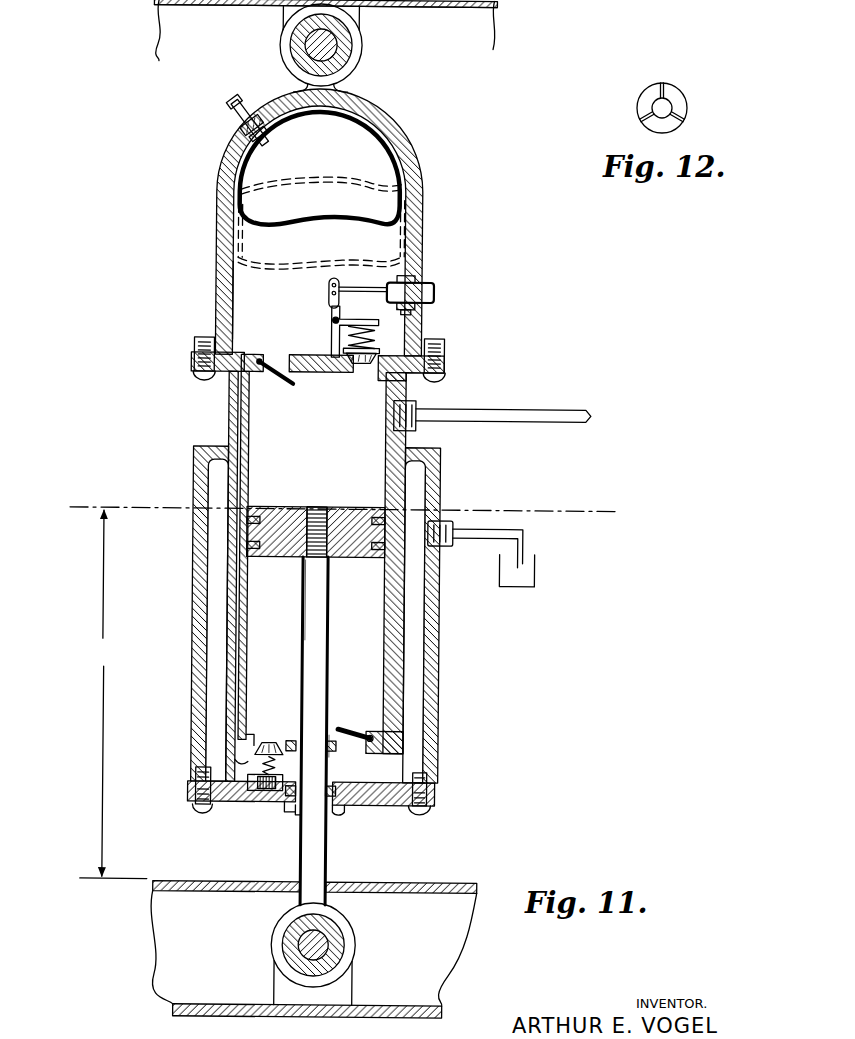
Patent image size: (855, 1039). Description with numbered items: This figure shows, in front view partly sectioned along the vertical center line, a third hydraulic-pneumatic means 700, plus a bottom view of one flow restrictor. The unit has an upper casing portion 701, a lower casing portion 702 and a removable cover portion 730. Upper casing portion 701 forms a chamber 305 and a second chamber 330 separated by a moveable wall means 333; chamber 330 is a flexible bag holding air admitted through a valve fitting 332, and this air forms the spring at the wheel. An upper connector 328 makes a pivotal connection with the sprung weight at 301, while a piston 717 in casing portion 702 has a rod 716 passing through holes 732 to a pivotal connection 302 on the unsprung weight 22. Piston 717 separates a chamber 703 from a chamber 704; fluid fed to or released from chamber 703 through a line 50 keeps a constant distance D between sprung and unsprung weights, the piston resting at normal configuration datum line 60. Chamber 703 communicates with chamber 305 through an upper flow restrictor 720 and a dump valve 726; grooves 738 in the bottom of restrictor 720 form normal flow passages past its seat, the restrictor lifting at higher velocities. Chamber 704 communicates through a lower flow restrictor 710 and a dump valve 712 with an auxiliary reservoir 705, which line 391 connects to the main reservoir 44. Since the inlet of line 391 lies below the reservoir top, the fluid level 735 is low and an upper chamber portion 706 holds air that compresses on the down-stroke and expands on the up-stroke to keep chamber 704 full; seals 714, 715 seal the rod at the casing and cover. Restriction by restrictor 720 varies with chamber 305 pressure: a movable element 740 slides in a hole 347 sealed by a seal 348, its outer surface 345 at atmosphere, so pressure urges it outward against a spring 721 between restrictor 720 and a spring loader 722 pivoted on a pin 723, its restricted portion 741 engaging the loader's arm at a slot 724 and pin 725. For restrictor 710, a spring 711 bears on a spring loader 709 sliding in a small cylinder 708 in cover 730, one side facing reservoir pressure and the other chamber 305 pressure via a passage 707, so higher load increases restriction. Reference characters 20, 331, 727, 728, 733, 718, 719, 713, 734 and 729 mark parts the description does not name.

In FIG. 11, the upper support structure 20 is at (427, 29).
In FIG. 11, the unsprung weight 22 is at (389, 940).
In FIG. 11, the pivotal connection 301 is at (296, 42).
In FIG. 11, the pivotal connection 302 is at (306, 943).
In FIG. 11, the upper connector 328 is at (354, 71).
In FIG. 11, the hydraulic-pneumatic means 700 is at (427, 183).
In FIG. 11, the chamber 305 is at (240, 271).
In FIG. 11, the second chamber 330 is at (272, 171).
In FIG. 11, the bladder wall 331 is at (267, 156).
In FIG. 11, the valve fitting 332 is at (225, 113).
In FIG. 11, the moveable wall means 333 is at (292, 206).
In FIG. 11, the upper casing portion 701 is at (399, 244).
In FIG. 11, the restricted portion 741 is at (400, 265).
In FIG. 11, the passage 707 is at (238, 356).
In FIG. 11, the flange bolt 727 is at (247, 383).
In FIG. 11, the flange bolt 728 is at (438, 359).
In FIG. 11, the dump valve 726 is at (291, 382).
In FIG. 11, the spring 721 is at (340, 347).
In FIG. 11, the upper flow restrictor 720 is at (359, 369).
In FIG. 12, the upper flow restrictor 720 is at (688, 106).
In FIG. 11, the valve spring 733 is at (324, 381).
In FIG. 11, the spring loader 722 is at (323, 312).
In FIG. 11, the pin 723 is at (323, 320).
In FIG. 11, the slot 724 is at (328, 283).
In FIG. 11, the pin 725 is at (324, 298).
In FIG. 11, the movable element 740 is at (431, 290).
In FIG. 11, the hole 347 is at (418, 277).
In FIG. 11, the outer surface 345 is at (423, 295).
In FIG. 11, the seal 348 is at (414, 310).
In FIG. 11, the chamber 703 is at (264, 411).
In FIG. 11, the chamber 704 is at (259, 621).
In FIG. 11, the lower casing portion 702 is at (441, 677).
In FIG. 11, the line 50 is at (497, 411).
In FIG. 11, the upper chamber portion 706 is at (422, 482).
In FIG. 11, the auxiliary reservoir 705 is at (216, 647).
In FIG. 11, the normal configuration datum line 60 is at (95, 511).
In FIG. 11, the distance D is at (115, 694).
In FIG. 11, the piston 717 is at (280, 510).
In FIG. 11, the piston rod threaded portion 718 is at (345, 507).
In FIG. 11, the fluid level 735 is at (218, 528).
In FIG. 11, the rod 716 is at (320, 860).
In FIG. 11, the rod surface 719 is at (300, 560).
In FIG. 11, the line 391 is at (483, 540).
In FIG. 11, the main reservoir 44 is at (521, 573).
In FIG. 11, the lower flow restrictor 710 is at (272, 742).
In FIG. 11, the small cylinder 708 is at (270, 802).
In FIG. 11, the spring loader 709 is at (273, 790).
In FIG. 11, the spring 711 is at (252, 753).
In FIG. 11, the dump valve 712 is at (348, 727).
In FIG. 11, the lever bracket 713 is at (389, 726).
In FIG. 11, the seal 714 is at (339, 751).
In FIG. 11, the seal groove 734 is at (332, 734).
In FIG. 11, the seal 715 is at (332, 776).
In FIG. 11, the bottom plate 729 is at (434, 788).
In FIG. 11, the removable cover portion 730 is at (403, 818).
In FIG. 11, the holes 732 is at (323, 811).
In FIG. 12, the grooves 738 is at (654, 96).